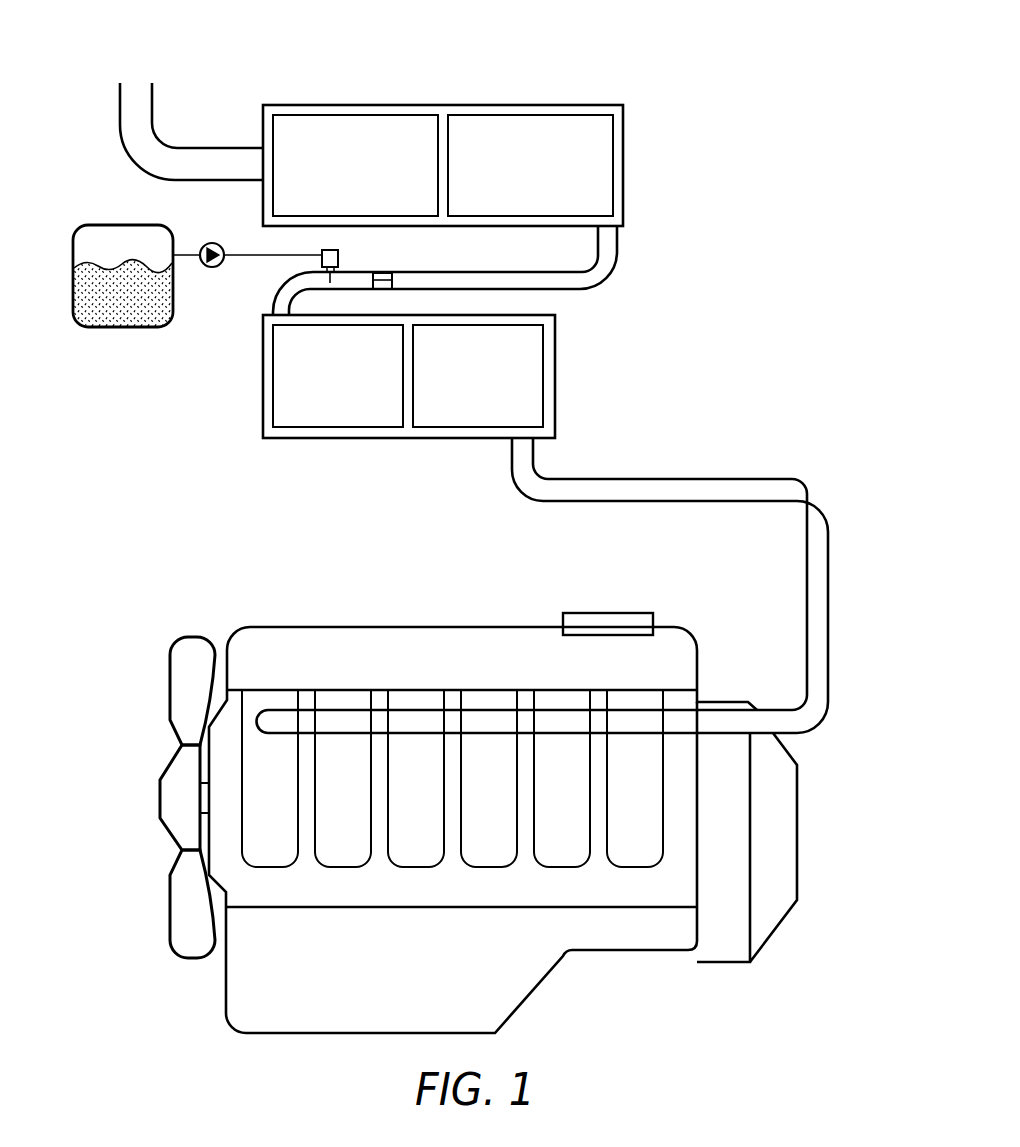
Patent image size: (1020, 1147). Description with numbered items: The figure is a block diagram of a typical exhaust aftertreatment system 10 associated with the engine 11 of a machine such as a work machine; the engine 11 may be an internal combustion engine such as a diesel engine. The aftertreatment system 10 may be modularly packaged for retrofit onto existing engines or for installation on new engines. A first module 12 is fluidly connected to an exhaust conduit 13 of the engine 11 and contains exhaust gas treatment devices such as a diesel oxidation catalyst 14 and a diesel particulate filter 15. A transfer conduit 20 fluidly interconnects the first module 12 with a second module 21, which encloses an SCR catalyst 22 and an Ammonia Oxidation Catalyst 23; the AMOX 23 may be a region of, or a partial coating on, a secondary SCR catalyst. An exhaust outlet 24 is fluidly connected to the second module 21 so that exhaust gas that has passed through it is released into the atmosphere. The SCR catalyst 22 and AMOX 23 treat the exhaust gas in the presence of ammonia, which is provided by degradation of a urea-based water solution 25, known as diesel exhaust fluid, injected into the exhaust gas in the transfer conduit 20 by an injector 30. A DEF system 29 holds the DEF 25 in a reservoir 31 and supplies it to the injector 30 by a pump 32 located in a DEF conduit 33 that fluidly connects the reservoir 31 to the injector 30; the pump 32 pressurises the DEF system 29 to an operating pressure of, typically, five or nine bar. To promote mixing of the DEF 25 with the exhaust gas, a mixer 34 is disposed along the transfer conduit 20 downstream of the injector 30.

The exhaust aftertreatment system 10 is at (626, 64).
The engine 11 is at (814, 797).
The first module 12 is at (440, 397).
The exhaust conduit 13 is at (699, 478).
The diesel oxidation catalyst 14 is at (462, 415).
The diesel particulate filter 15 is at (337, 415).
The transfer conduit 20 is at (619, 249).
The second module 21 is at (472, 146).
The SCR catalyst 22 is at (527, 128).
The Ammonia Oxidation Catalyst 23 is at (353, 128).
The exhaust outlet 24 is at (131, 118).
The urea-based water solution 25 is at (122, 315).
The DEF system 29 is at (262, 289).
The injector 30 is at (340, 257).
The reservoir 31 is at (123, 272).
The pump 32 is at (212, 268).
The DEF conduit 33 is at (242, 255).
The mixer 34 is at (393, 278).